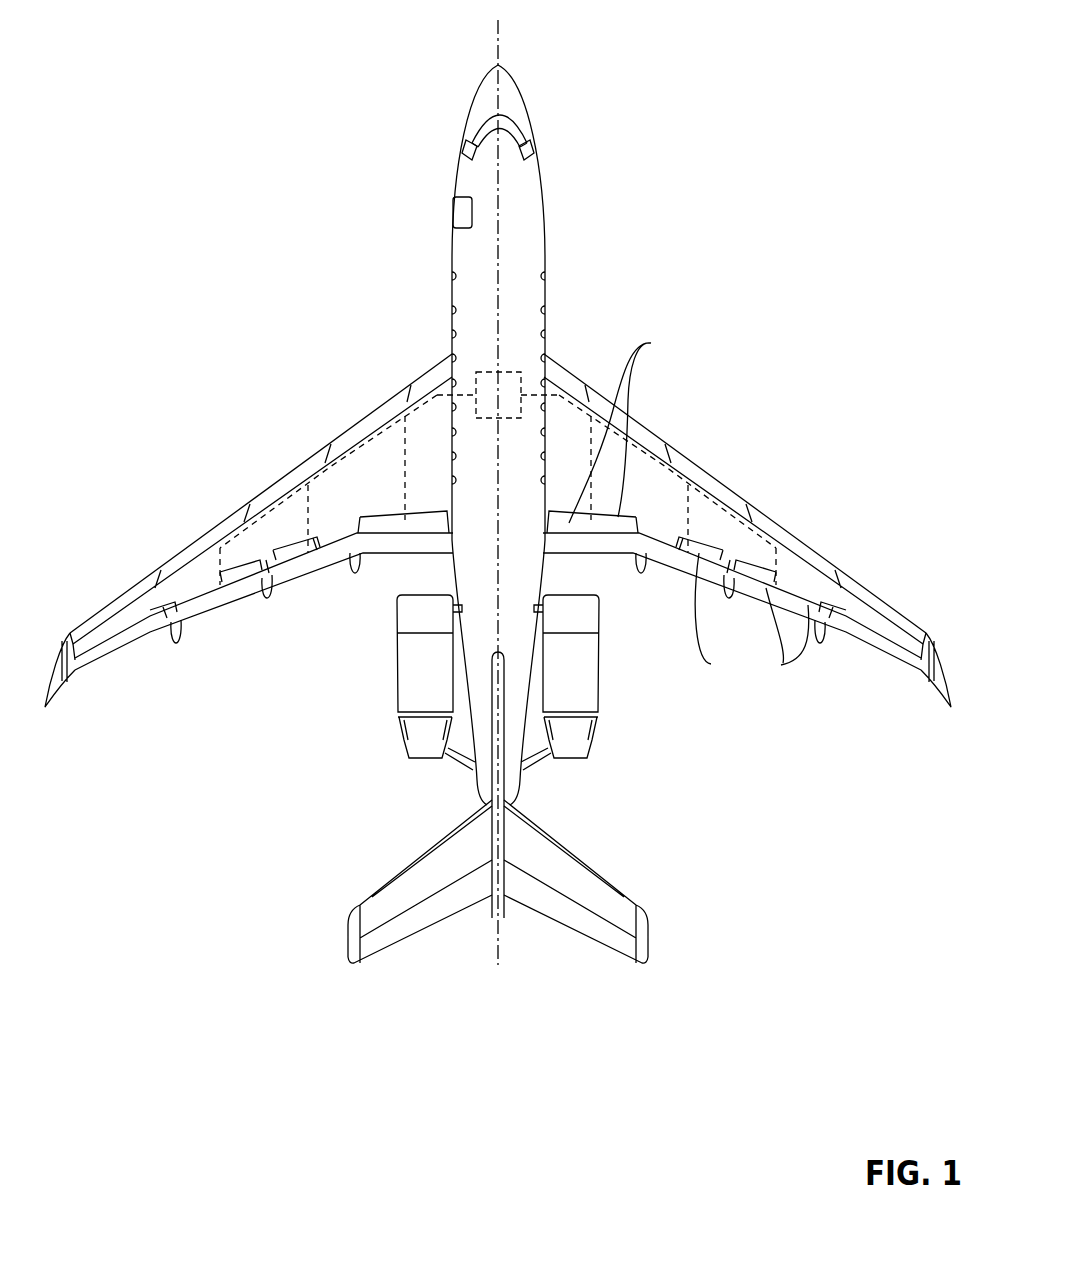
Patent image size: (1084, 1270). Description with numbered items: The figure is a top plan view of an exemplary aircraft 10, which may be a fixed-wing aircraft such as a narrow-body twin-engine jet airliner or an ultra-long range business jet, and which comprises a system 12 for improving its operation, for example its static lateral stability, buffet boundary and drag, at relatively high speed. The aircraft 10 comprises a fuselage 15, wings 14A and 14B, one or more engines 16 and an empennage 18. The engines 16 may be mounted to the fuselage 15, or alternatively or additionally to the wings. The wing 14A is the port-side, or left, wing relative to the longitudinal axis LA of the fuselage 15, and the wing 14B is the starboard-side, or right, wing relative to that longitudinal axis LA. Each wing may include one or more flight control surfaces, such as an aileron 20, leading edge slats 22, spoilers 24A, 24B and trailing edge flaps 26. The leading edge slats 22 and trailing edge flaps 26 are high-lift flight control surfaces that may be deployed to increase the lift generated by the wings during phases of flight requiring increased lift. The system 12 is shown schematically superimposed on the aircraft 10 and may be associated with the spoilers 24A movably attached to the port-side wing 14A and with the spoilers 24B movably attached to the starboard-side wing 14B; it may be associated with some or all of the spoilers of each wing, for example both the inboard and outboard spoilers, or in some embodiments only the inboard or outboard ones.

The aircraft 10 is at (725, 103).
The longitudinal axis LA is at (498, 30).
The system 12 is at (517, 413).
The wing 14A is at (163, 400).
The wing 14B is at (817, 400).
The fuselage 15 is at (516, 289).
The engines 16 is at (410, 690).
The empennage 18 is at (318, 899).
The aileron 20 is at (113, 645).
The leading edge slat 22 is at (300, 468).
The spoilers 24A is at (427, 523).
The spoilers 24B is at (732, 509).
The trailing edge flap 26 is at (320, 552).